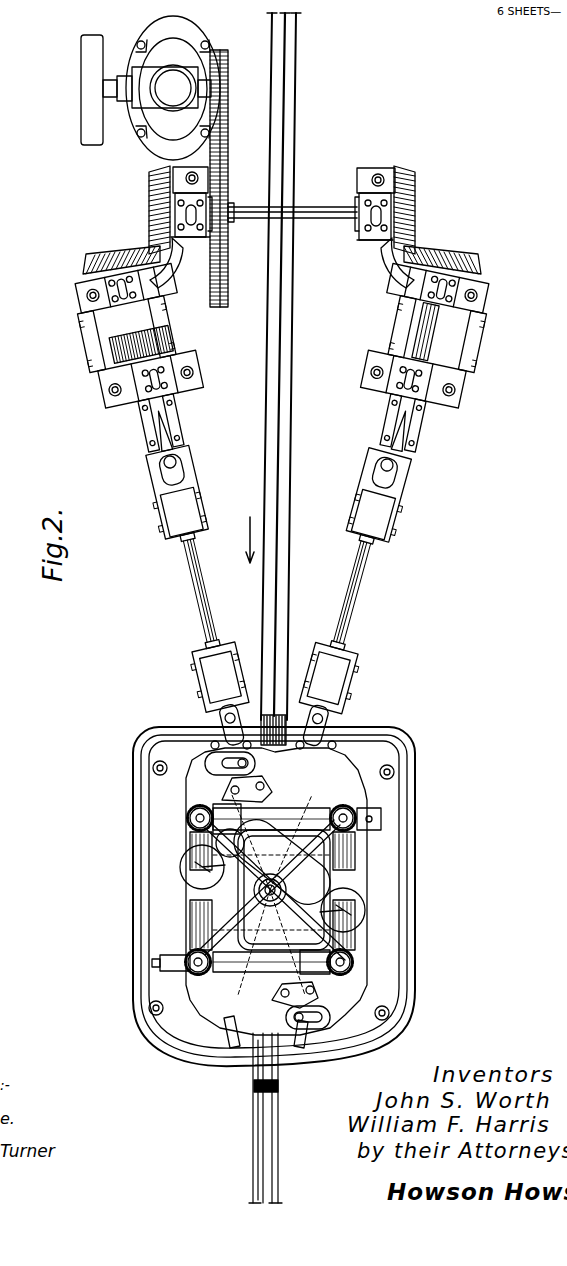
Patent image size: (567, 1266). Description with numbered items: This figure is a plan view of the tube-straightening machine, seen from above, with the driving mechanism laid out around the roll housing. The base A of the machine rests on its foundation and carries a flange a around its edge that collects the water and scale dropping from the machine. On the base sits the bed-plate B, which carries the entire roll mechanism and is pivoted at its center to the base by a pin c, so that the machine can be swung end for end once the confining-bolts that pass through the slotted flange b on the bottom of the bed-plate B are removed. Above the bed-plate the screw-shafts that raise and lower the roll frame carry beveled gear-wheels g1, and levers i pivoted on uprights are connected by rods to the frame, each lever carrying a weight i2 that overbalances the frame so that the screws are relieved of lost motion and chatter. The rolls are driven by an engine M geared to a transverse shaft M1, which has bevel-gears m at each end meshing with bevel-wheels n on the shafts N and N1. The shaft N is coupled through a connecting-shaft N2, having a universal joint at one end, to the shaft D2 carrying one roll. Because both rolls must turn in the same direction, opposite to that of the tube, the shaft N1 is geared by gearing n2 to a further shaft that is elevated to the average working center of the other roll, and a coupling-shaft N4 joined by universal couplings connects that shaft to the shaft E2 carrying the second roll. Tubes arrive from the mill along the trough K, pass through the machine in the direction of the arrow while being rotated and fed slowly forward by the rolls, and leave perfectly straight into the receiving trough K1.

The engine M is at (72, 112).
The transverse shaft M1 is at (357, 180).
The bevel-gears m is at (150, 215).
The bevel-wheels n is at (456, 250).
The gearing n2 is at (110, 346).
The shaft N is at (418, 342).
The shaft N1 is at (130, 334).
The connecting-shaft N2 is at (356, 568).
The coupling-shaft N4 is at (190, 575).
The trough K is at (261, 455).
The trough K1 is at (258, 1117).
The base A is at (134, 760).
The flange a is at (404, 880).
The flange b is at (190, 780).
The bed-plate B is at (186, 790).
The pin c is at (286, 1018).
The beveled gear-wheels g1 is at (187, 818).
The levers i is at (300, 888).
The weight i2 is at (180, 866).
The shaft D2 is at (226, 1030).
The shaft E2 is at (305, 1040).